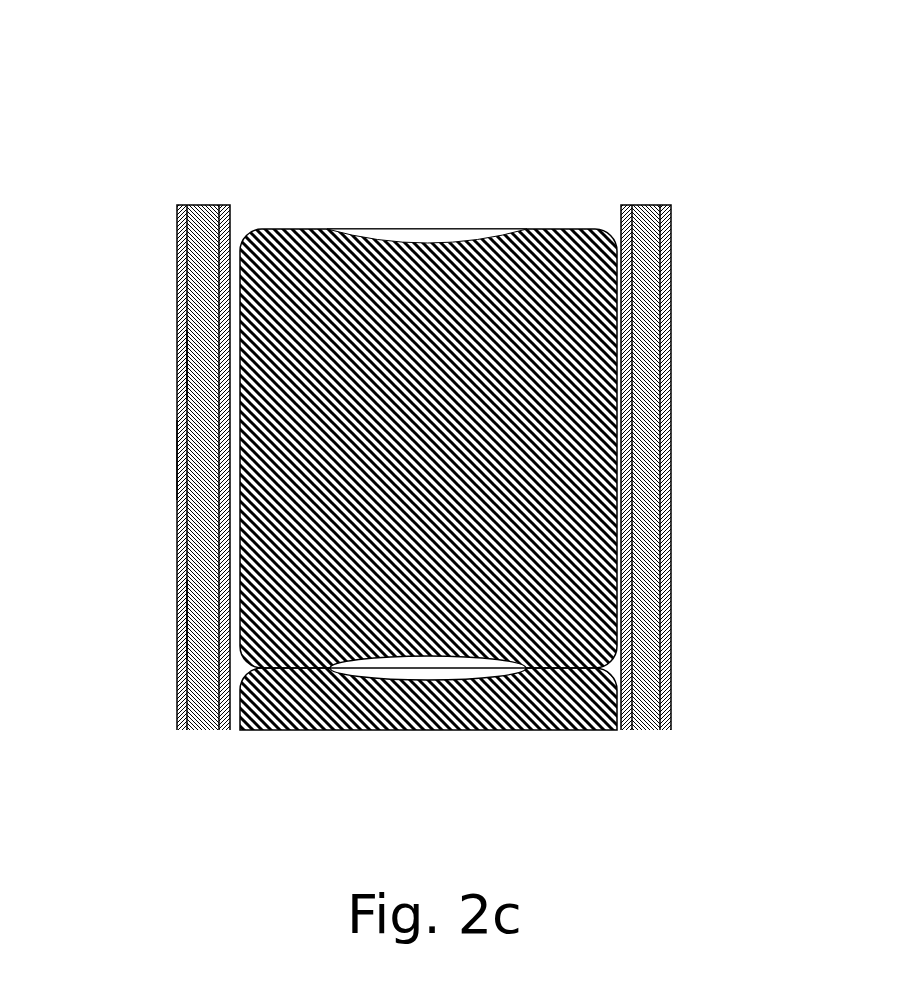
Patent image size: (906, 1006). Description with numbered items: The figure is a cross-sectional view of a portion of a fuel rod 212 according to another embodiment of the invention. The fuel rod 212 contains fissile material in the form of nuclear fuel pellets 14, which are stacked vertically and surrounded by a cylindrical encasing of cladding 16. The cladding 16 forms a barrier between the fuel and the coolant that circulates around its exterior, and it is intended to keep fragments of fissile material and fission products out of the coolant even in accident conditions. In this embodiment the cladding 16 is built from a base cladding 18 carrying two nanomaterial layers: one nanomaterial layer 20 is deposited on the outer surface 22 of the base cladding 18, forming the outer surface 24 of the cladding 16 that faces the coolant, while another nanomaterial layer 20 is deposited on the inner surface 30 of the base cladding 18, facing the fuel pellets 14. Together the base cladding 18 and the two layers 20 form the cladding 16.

The fuel rod 212 is at (632, 132).
The nanomaterial layer 20 is at (223, 218).
The base cladding 18 is at (193, 217).
The inner surface 30 is at (200, 378).
The outer surface 24 is at (178, 457).
The outer surface 22 is at (190, 620).
The nuclear fuel pellet 14 is at (573, 240).
The cladding 16 is at (650, 748).